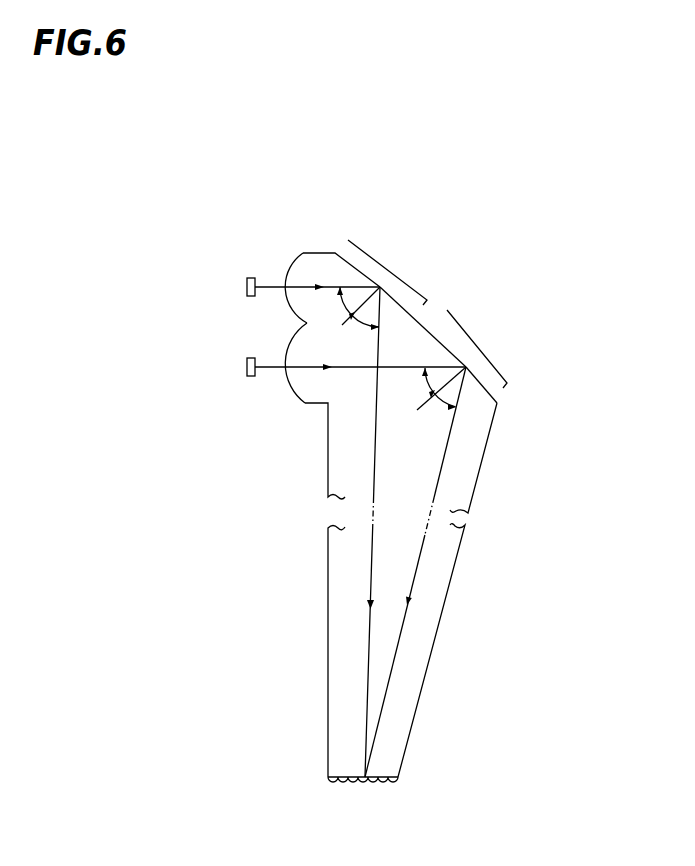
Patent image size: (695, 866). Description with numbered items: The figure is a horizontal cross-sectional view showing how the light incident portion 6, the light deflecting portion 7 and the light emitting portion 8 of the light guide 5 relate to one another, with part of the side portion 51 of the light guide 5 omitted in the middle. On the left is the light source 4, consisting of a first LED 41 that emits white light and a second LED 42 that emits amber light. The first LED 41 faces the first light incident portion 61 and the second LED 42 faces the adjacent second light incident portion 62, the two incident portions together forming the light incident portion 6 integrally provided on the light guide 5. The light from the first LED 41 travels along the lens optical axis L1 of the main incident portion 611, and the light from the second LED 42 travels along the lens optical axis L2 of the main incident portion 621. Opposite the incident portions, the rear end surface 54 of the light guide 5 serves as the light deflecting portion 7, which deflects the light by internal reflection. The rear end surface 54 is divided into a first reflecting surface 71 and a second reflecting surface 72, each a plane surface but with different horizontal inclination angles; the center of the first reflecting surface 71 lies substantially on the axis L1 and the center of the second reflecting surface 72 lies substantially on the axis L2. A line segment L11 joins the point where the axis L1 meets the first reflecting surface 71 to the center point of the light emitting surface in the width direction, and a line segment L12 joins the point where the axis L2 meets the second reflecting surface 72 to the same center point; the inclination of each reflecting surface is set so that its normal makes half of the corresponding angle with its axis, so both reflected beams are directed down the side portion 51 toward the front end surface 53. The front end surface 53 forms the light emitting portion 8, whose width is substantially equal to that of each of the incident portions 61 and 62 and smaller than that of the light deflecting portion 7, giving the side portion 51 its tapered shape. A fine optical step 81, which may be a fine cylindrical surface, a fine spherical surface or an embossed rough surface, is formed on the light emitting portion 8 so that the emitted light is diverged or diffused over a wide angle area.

The light incident portion 6 is at (245, 215).
The light source 4 is at (190, 365).
The first LED 41 is at (243, 287).
The second LED 42 is at (243, 367).
The first light incident portion 61 is at (257, 267).
The main incident portion 611 is at (285, 270).
The second light incident portion 62 is at (288, 405).
The main incident portion 621 is at (288, 392).
The light deflecting portion 7 is at (442, 318).
The rear end surface 54 is at (442, 318).
The first reflecting surface 71 is at (408, 282).
The second reflecting surface 72 is at (490, 357).
The light guide 5 is at (497, 437).
The side portion 51 is at (430, 628).
The light emitting portion 8 is at (350, 805).
The front end surface 53 is at (385, 783).
The optical step 81 is at (332, 782).
The lens optical axis L1 is at (302, 288).
The lens optical axis L2 is at (348, 368).
The line segment L11 is at (372, 575).
The line segment L12 is at (417, 568).